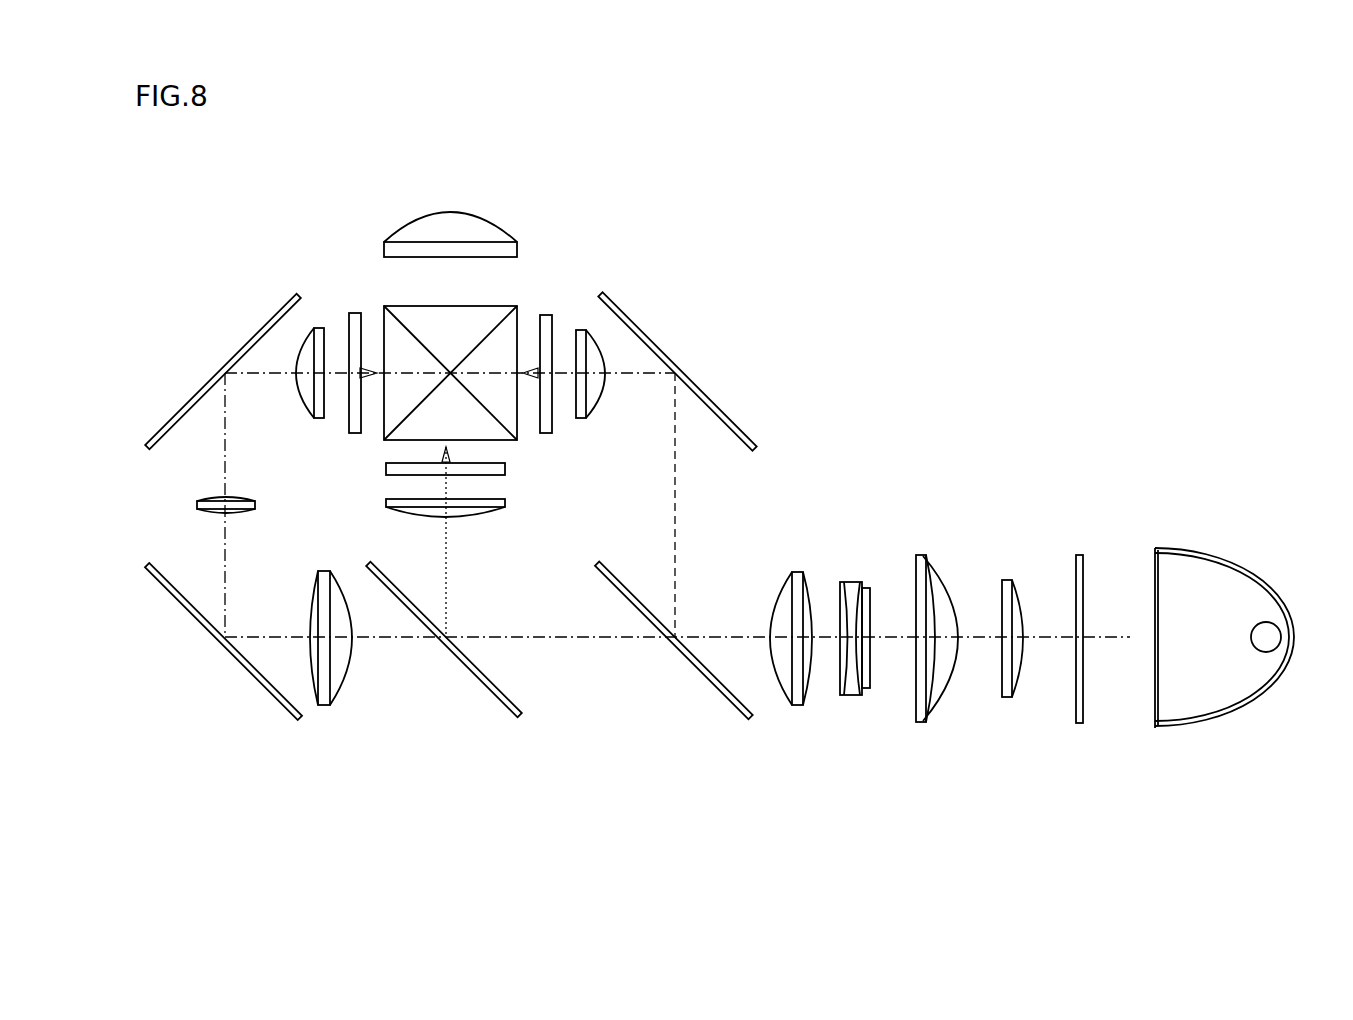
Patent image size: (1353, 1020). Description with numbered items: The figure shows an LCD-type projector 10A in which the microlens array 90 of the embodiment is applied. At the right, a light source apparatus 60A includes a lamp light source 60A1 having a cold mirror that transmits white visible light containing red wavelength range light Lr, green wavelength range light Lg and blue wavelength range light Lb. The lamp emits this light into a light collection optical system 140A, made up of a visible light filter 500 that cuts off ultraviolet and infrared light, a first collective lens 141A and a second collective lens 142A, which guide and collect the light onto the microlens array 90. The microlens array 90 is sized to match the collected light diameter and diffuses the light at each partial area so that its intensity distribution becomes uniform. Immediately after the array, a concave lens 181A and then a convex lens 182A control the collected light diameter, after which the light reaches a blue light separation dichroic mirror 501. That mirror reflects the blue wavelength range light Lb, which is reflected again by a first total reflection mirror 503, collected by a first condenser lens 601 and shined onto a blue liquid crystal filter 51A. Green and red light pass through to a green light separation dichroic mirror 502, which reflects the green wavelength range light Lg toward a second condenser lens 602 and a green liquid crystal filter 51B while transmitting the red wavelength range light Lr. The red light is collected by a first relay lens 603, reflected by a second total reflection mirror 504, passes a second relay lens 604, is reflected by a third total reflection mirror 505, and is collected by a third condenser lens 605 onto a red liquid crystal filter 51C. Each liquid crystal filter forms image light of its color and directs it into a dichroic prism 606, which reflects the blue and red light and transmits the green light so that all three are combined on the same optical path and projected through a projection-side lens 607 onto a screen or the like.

The projector 10A is at (843, 321).
The light source apparatus 60A is at (1224, 557).
The lamp light source 60A1 is at (1220, 572).
The third total reflection mirror 505 is at (252, 336).
The first total reflection mirror 503 is at (651, 338).
The second total reflection mirror 504 is at (252, 676).
The green light separation dichroic mirror 502 is at (475, 676).
The blue light separation dichroic mirror 501 is at (703, 678).
The third condenser lens 605 is at (319, 329).
The red liquid crystal filter 51C is at (353, 312).
The dichroic prism 606 is at (506, 305).
The projection-side lens 607 is at (404, 223).
The blue liquid crystal filter 51A is at (548, 315).
The first condenser lens 601 is at (582, 329).
The green liquid crystal filter 51B is at (386, 465).
The second condenser lens 602 is at (385, 505).
The second relay lens 604 is at (195, 503).
The first relay lens 603 is at (340, 690).
The convex lens 182A is at (795, 706).
The concave lens 181A is at (857, 580).
The microlens array 90 is at (866, 689).
The light collection optical system 140A is at (984, 618).
The second collective lens 142A is at (921, 723).
The first collective lens 141A is at (1009, 580).
The visible light filter 500 is at (1080, 724).
The red wavelength range light Lr is at (223, 548).
The green wavelength range light Lg is at (447, 548).
The blue wavelength range light Lb is at (677, 548).